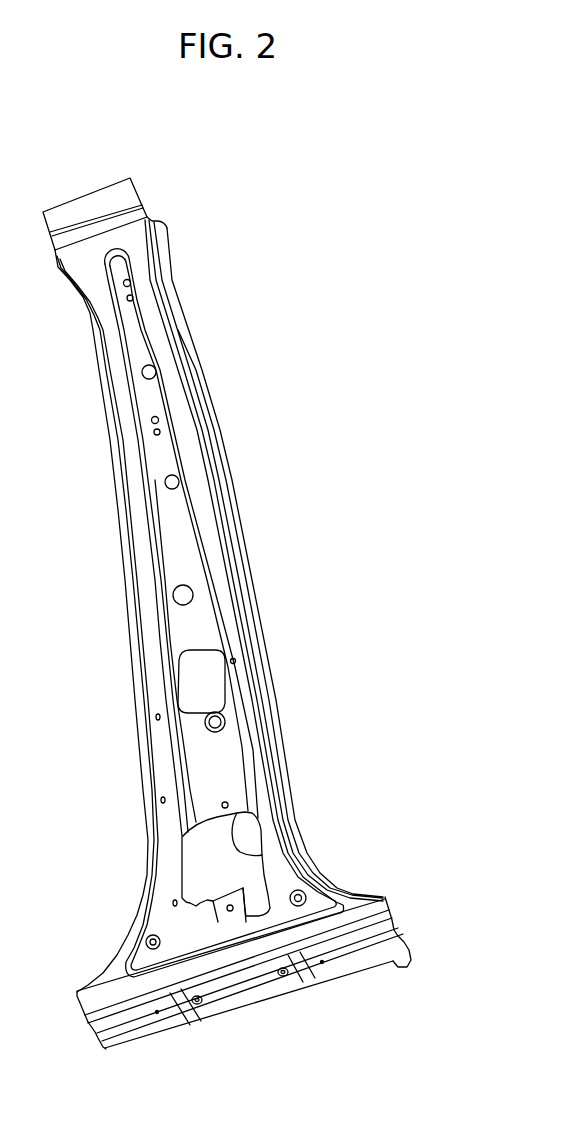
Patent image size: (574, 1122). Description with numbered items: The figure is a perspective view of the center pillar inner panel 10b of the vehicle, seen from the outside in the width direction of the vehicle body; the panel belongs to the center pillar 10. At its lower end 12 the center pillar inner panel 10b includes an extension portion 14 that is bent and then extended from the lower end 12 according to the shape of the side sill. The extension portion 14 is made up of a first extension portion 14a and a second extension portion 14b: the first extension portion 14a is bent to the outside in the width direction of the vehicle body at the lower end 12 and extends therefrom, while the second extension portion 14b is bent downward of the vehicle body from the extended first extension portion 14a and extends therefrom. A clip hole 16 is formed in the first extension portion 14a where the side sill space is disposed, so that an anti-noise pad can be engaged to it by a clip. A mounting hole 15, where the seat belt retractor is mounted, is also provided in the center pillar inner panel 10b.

The center pillar 10 is at (213, 585).
The center pillar inner panel 10b is at (299, 348).
The lower end 12 is at (358, 913).
The extension portion 14 is at (302, 972).
The first extension portion 14a is at (396, 930).
The second extension portion 14b is at (405, 962).
The mounting hole 15 is at (245, 812).
The clip hole 16 is at (284, 978).